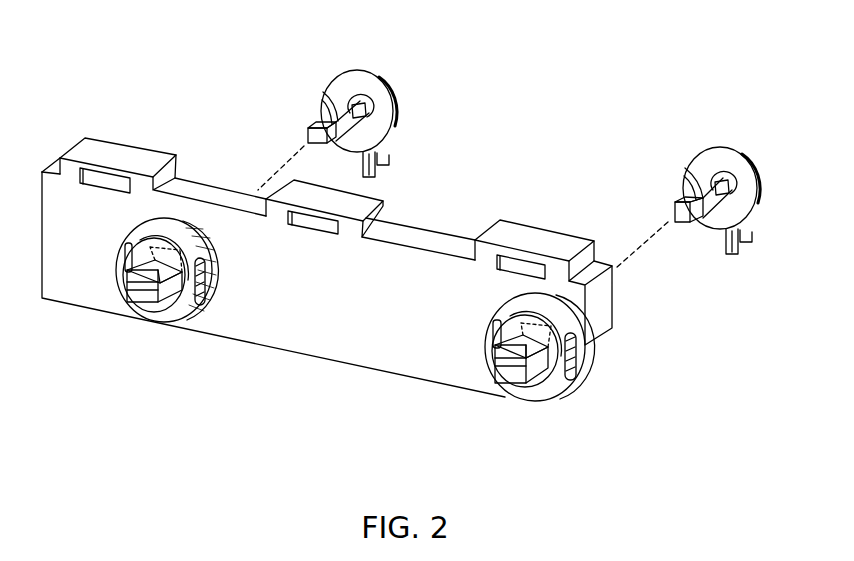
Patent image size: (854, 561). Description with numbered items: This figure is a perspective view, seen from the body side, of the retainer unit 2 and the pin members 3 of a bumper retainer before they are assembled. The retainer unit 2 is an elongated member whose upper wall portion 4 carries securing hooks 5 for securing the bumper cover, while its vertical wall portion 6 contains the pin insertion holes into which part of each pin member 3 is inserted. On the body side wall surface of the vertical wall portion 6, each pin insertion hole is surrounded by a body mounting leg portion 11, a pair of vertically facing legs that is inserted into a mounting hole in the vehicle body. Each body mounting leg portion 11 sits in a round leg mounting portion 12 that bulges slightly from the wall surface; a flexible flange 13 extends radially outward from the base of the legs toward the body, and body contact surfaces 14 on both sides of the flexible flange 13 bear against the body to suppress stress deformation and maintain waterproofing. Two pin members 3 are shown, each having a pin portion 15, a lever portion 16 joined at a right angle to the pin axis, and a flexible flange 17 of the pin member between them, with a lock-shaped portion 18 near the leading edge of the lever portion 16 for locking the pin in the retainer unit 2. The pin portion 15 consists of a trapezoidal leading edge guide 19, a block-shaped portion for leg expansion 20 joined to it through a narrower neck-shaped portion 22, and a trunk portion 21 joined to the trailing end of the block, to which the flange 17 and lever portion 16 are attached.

The retainer unit 2 is at (360, 256).
The pin member 3 is at (487, 167).
The upper wall portion 4 is at (200, 190).
The securing hook 5 is at (115, 156).
The vertical wall portion 6 is at (342, 338).
The body mounting leg portion 11 is at (168, 236).
The leg mounting portion 12 is at (145, 228).
The flexible flange of the leg portion 13 is at (172, 306).
The body contact surface 14 is at (128, 262).
The pin portion 15 is at (294, 125).
The lever portion 16 is at (386, 160).
The flexible flange of the pin member 17 is at (348, 90).
The lock-shaped portion 18 is at (380, 160).
The leading edge guide 19 is at (308, 136).
The block-shaped portion for leg expansion 20 is at (375, 124).
The trunk portion 21 is at (340, 100).
The neck-shaped portion 22 is at (348, 112).